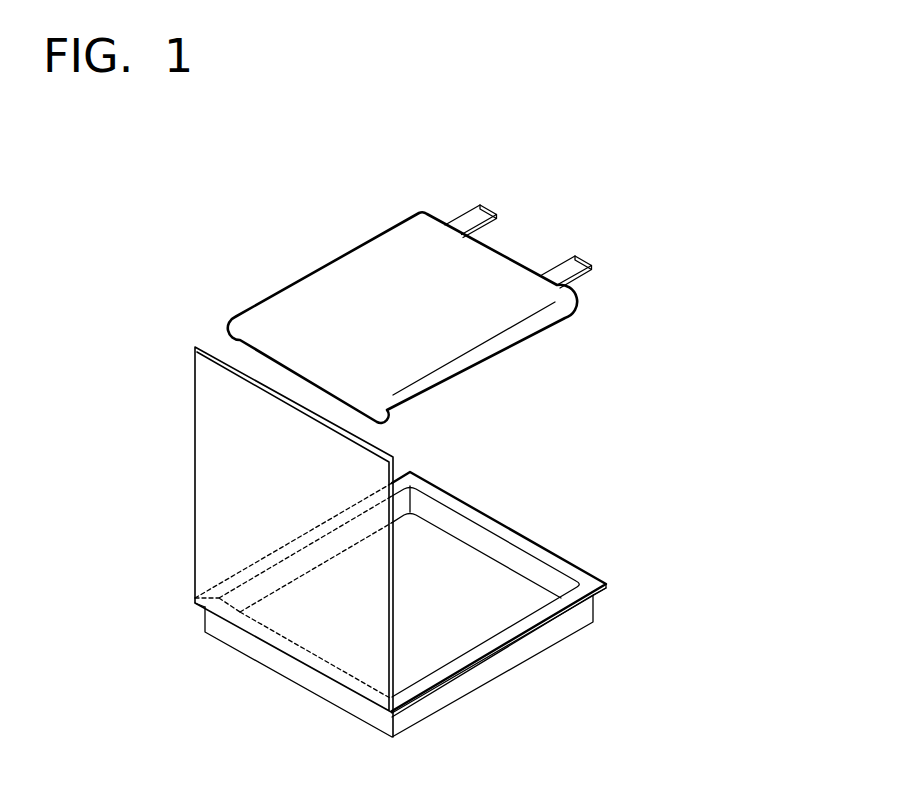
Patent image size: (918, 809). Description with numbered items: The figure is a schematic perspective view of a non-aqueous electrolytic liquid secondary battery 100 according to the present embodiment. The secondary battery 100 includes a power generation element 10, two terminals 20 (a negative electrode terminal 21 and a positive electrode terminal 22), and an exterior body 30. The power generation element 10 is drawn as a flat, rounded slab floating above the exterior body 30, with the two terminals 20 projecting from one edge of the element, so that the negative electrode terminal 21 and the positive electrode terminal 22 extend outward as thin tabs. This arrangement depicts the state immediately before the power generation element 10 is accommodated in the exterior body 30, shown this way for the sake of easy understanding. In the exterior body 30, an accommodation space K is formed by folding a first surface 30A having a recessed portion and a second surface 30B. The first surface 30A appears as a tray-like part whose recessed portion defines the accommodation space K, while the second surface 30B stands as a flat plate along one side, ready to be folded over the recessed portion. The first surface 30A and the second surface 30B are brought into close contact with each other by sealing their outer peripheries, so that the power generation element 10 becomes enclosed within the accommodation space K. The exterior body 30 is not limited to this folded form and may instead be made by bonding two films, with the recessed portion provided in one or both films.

The non-aqueous electrolytic liquid secondary battery 100 is at (737, 207).
The power generation element 10 is at (305, 264).
The terminals 20 is at (551, 206).
The negative electrode terminal 21 is at (577, 262).
The positive electrode terminal 22 is at (471, 219).
The exterior body 30 is at (519, 527).
The first surface 30A is at (566, 568).
The second surface 30B is at (244, 465).
The accommodation space K is at (463, 610).